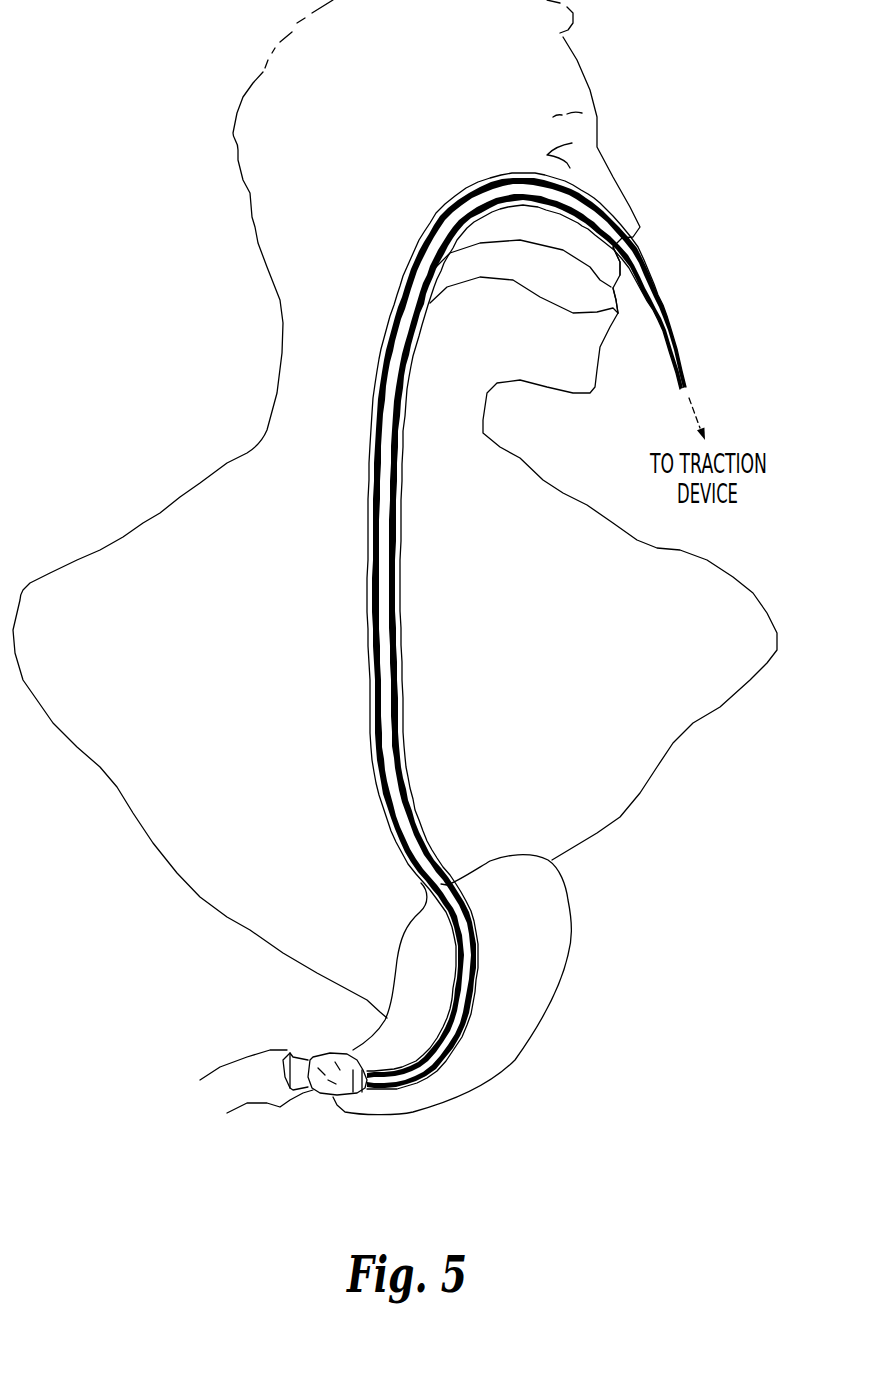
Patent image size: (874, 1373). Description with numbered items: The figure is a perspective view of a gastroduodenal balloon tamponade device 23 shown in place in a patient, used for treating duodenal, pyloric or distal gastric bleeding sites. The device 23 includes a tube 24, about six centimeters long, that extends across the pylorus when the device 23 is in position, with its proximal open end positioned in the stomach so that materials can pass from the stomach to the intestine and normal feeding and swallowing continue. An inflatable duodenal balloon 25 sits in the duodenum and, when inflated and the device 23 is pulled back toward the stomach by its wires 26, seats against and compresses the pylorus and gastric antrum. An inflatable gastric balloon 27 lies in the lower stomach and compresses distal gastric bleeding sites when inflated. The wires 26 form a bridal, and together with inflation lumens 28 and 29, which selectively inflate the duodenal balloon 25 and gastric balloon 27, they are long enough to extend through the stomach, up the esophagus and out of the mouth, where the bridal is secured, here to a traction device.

The gastroduodenal balloon tamponade device 23 is at (410, 1095).
The tube 24 is at (347, 1048).
The duodenal balloon 25 is at (280, 1083).
The wires 26 is at (673, 369).
The gastric balloon 27 is at (332, 1097).
The inflation lumen 28 is at (652, 267).
The inflation lumen 29 is at (650, 281).